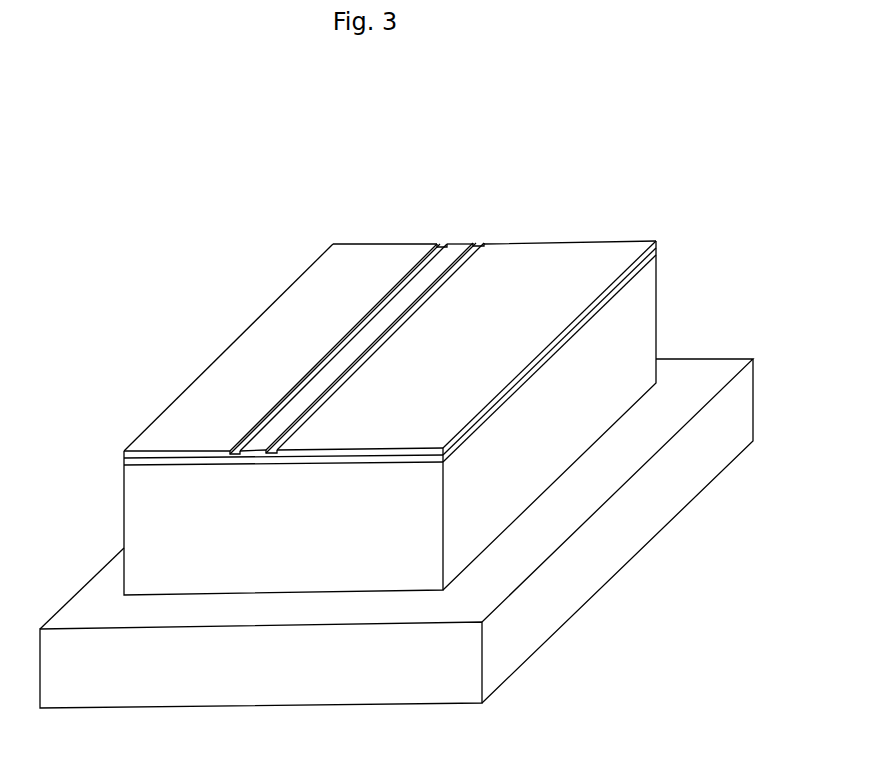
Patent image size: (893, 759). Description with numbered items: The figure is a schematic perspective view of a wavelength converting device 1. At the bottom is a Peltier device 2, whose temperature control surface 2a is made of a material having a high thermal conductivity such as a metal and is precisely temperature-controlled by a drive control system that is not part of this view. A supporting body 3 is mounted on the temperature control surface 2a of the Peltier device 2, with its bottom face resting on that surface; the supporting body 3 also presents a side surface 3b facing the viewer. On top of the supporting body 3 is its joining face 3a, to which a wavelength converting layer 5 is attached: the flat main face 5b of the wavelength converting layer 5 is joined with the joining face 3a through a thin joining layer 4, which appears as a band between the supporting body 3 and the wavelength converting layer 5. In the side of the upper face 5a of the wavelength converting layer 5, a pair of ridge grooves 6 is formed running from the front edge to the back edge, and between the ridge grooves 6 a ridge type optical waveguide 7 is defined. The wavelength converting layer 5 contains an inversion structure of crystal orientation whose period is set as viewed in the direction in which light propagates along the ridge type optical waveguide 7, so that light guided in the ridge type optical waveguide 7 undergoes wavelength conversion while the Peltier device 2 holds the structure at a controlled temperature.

The wavelength converting device 1 is at (708, 196).
The Peltier device 2 is at (738, 394).
The temperature control surface 2a is at (696, 367).
The supporting body 3 is at (650, 321).
The joining face 3a is at (533, 373).
The side surface of substrate 3b is at (598, 440).
The joining layer 4 is at (403, 459).
The wavelength converting layer 5 is at (560, 244).
The upper face 5a is at (522, 253).
The main face 5b is at (416, 456).
The ridge groove 6 is at (328, 355).
The ridge type optical waveguide 7 is at (400, 298).